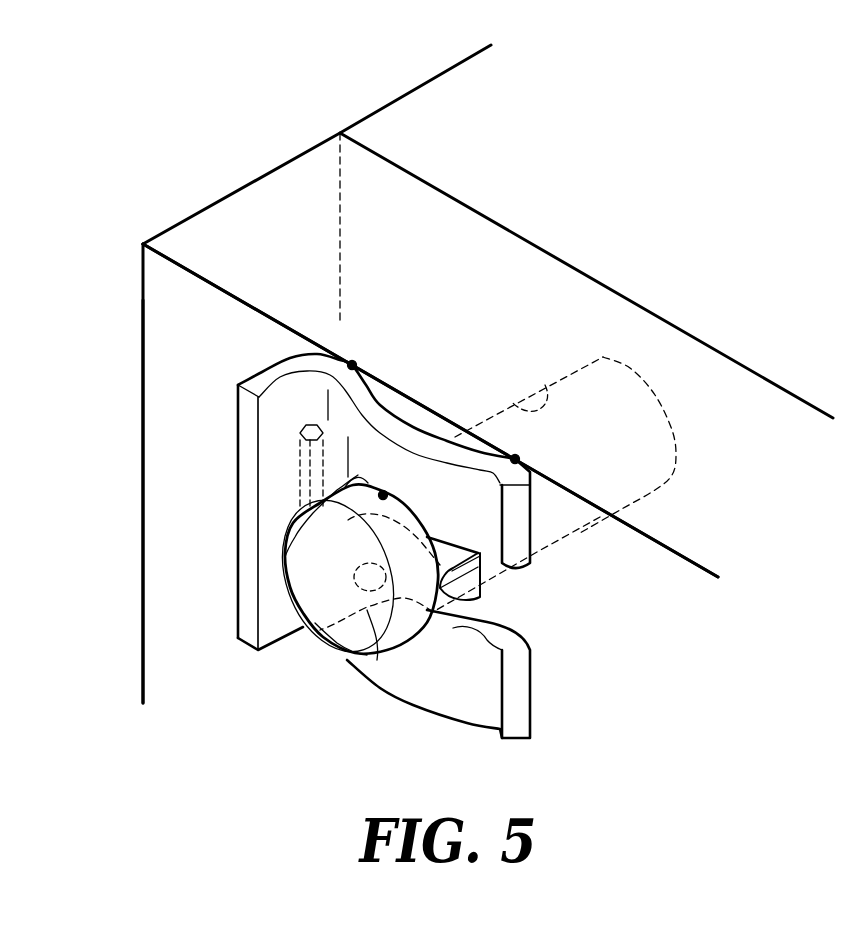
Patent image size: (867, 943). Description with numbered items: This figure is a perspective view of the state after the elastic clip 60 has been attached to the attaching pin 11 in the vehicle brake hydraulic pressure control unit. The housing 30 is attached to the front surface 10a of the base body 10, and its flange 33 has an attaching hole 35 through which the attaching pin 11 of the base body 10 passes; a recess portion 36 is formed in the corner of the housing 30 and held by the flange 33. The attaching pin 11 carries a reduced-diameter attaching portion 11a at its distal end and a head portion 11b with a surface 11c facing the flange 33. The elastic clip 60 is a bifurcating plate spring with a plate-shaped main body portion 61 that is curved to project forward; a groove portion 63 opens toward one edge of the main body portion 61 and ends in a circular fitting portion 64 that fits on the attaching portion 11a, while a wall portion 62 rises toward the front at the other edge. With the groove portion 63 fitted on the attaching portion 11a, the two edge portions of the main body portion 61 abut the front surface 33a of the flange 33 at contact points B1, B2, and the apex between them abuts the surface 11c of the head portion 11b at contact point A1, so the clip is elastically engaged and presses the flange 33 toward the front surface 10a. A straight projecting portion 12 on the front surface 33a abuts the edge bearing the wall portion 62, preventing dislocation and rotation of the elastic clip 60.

The base body 10 is at (375, 109).
The front surface 10a is at (360, 170).
The housing 30 is at (196, 212).
The flange 33 is at (413, 361).
The front surface 33a is at (170, 293).
The attaching hole 35 is at (547, 393).
The recess portion 36 is at (152, 268).
The elastic clip 60 is at (252, 375).
The main body portion 61 is at (407, 437).
The wall portion 62 is at (247, 590).
The groove portion 63 is at (480, 624).
The fitting portion 64 is at (323, 620).
The attaching pin 11 is at (407, 650).
The attaching portion 11a is at (480, 573).
The head portion 11b is at (367, 640).
The surface 11c is at (340, 525).
The projecting portion 12 is at (297, 465).
The contact point A1 is at (385, 495).
The contact point B1 is at (517, 459).
The contact point B2 is at (355, 363).